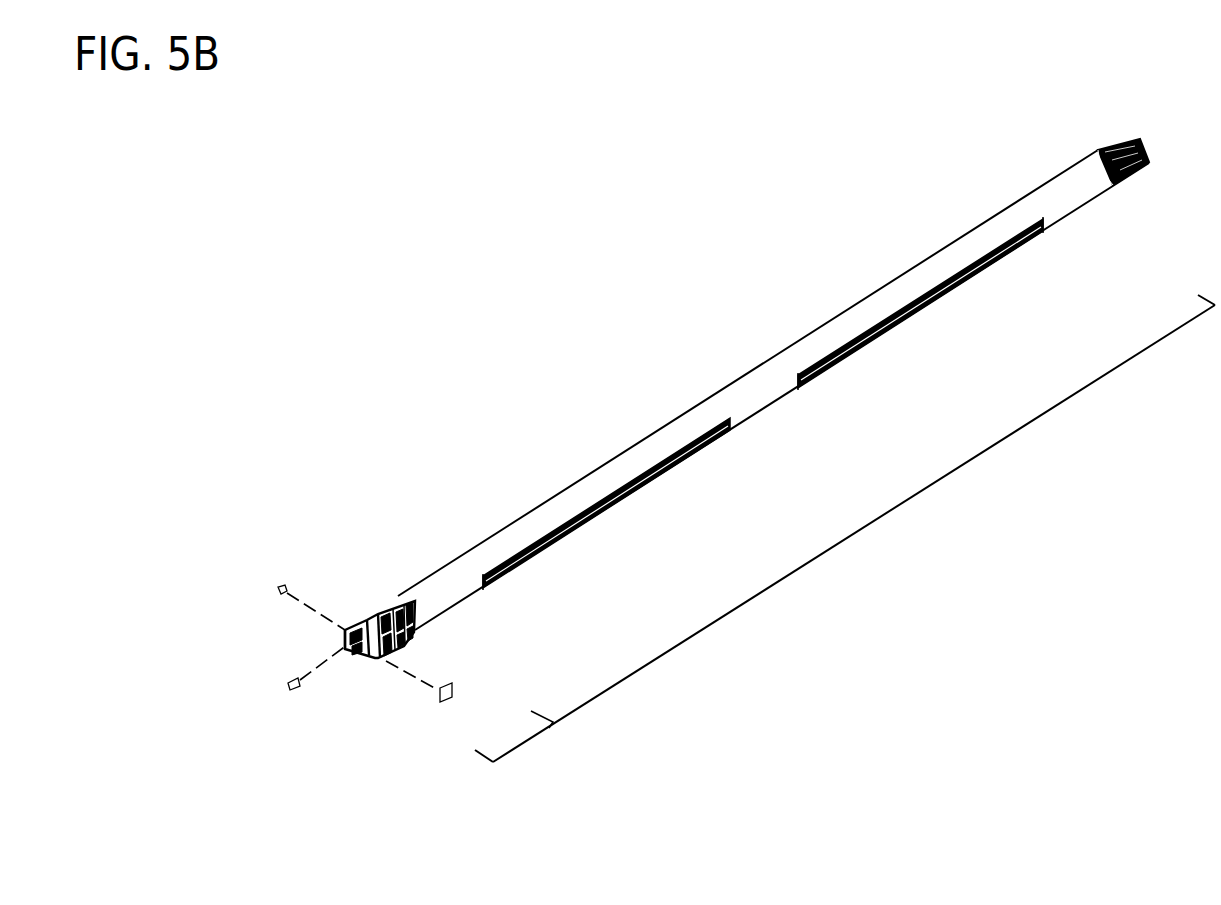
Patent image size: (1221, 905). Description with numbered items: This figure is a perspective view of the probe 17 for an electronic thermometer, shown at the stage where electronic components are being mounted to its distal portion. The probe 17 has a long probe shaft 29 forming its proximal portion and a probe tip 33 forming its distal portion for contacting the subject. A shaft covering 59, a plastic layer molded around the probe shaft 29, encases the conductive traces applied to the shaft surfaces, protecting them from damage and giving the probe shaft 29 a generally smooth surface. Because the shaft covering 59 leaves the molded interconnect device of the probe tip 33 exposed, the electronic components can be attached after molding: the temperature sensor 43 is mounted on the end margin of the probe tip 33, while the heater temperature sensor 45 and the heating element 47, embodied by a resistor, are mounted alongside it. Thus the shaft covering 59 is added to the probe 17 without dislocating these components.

The probe 17 is at (537, 266).
The probe shaft 29 is at (880, 515).
The probe tip 33 is at (525, 740).
The temperature sensor 43 is at (292, 688).
The heater temperature sensor 45 is at (280, 588).
The heating element 47 is at (456, 690).
The shaft covering 59 is at (505, 538).